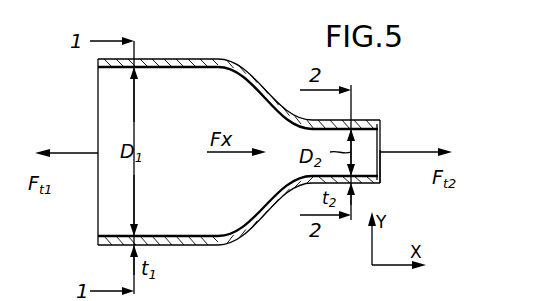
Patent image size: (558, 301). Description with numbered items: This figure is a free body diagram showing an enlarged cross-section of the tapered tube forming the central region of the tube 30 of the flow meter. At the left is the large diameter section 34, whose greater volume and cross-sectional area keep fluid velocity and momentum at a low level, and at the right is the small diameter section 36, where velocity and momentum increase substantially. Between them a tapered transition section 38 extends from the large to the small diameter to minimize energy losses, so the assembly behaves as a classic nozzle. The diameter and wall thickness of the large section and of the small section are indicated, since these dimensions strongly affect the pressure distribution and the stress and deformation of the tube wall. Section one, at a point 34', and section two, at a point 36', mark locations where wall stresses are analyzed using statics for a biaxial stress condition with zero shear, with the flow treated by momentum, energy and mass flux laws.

The central region of the tube 30 is at (283, 259).
The large diameter section 34 is at (158, 128).
The point in section 1 34' is at (168, 221).
The small diameter section 36 is at (370, 134).
The point in section 2 36' is at (417, 186).
The tapered transition section 38 is at (272, 42).